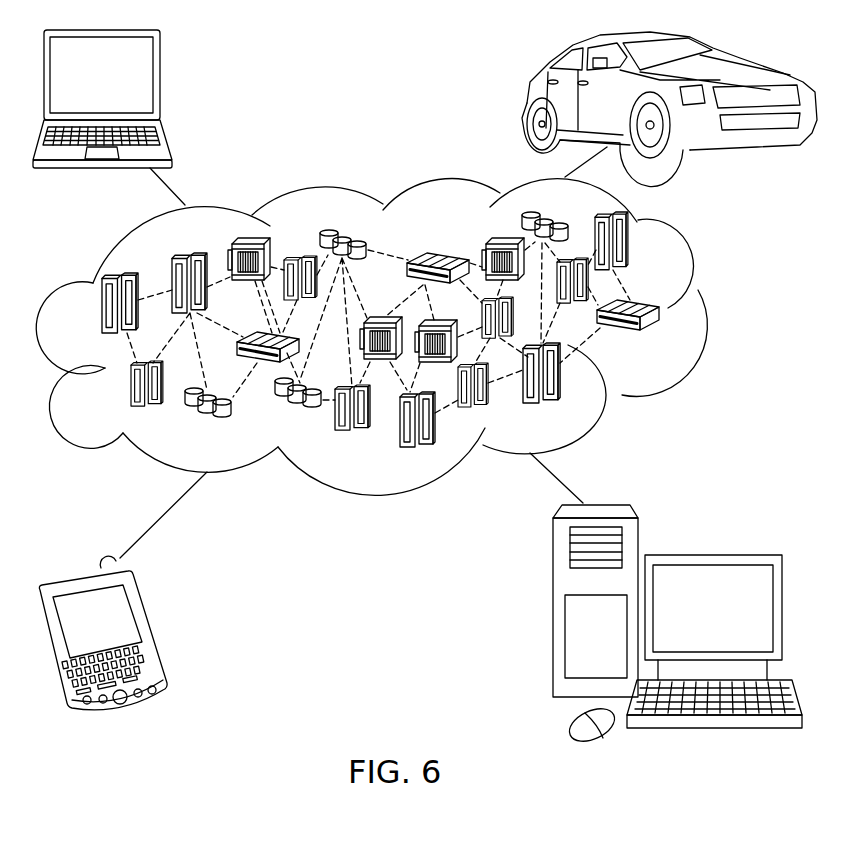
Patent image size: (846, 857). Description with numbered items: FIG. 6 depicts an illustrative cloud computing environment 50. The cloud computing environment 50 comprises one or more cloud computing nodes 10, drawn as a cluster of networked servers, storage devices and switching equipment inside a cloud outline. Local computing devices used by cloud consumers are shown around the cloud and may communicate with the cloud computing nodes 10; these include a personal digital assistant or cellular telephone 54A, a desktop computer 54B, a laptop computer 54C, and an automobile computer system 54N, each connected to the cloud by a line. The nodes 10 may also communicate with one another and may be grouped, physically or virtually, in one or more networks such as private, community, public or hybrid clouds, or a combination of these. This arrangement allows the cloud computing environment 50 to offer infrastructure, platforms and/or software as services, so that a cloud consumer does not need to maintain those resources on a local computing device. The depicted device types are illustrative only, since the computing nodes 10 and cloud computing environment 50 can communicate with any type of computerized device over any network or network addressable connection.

The cloud computing node 10 is at (733, 302).
The cloud computing environment 50 is at (399, 337).
The personal digital assistant or cellular telephone 54A is at (152, 633).
The desktop computer 54B is at (710, 553).
The laptop computer 54C is at (160, 82).
The automobile computer system 54N is at (525, 96).